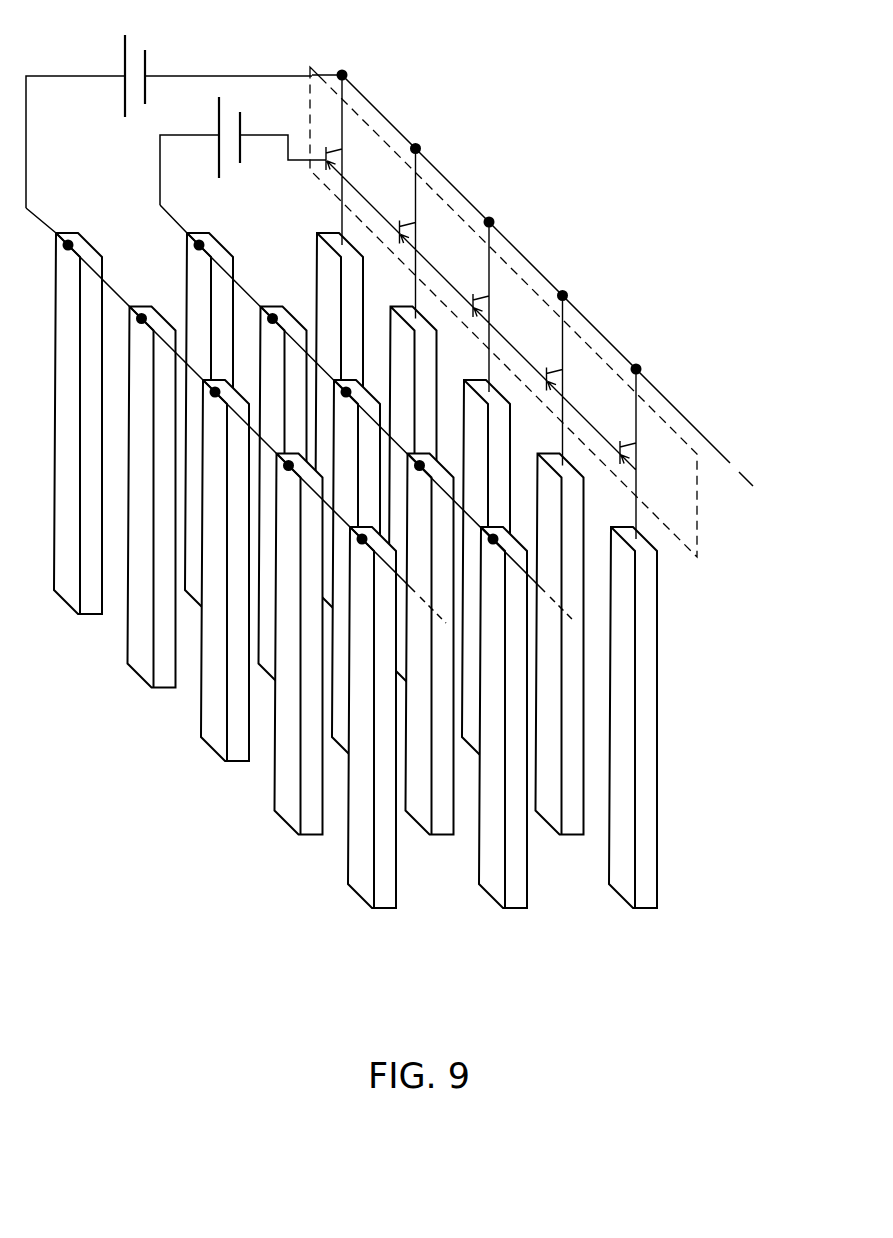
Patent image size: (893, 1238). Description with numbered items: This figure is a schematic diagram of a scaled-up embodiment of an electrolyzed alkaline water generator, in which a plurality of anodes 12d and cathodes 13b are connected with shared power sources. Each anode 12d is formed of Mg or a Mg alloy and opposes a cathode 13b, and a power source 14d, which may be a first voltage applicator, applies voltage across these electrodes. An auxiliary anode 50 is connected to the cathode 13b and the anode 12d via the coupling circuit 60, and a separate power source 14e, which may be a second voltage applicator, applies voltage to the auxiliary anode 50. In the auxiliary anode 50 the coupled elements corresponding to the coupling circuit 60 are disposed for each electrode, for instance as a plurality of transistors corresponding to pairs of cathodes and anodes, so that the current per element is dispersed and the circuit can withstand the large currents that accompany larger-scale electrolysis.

The power source 14e is at (124, 56).
The power source 14d is at (240, 121).
The auxiliary anode 50 is at (382, 907).
The anode 12d is at (512, 907).
The cathode 13b is at (645, 907).
The coupling circuit 60 is at (697, 520).